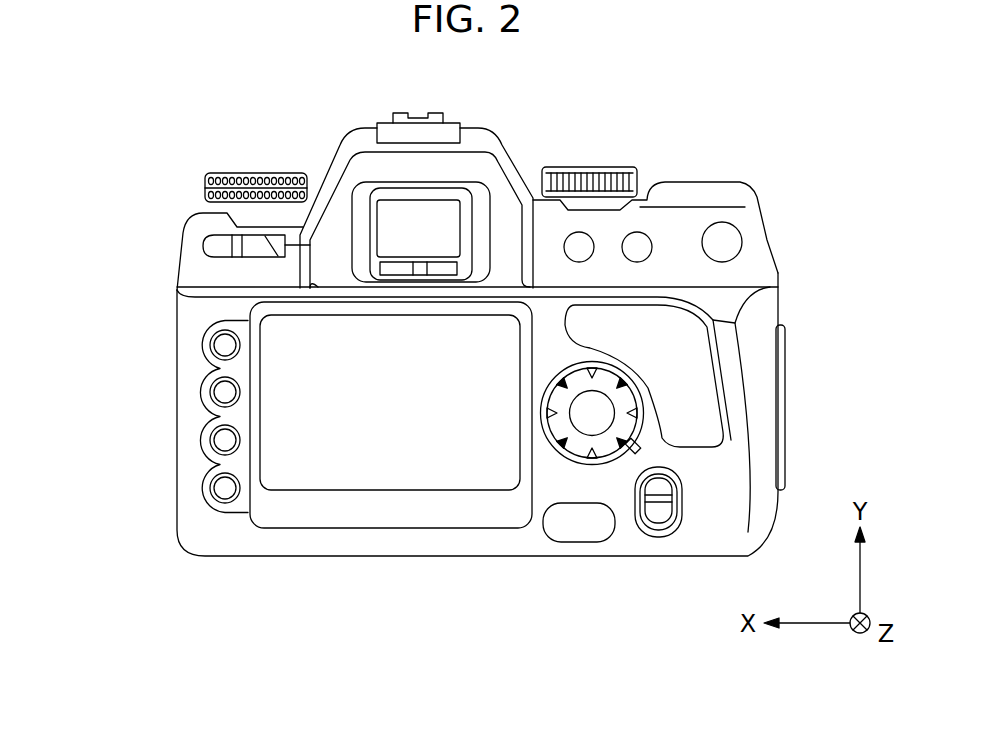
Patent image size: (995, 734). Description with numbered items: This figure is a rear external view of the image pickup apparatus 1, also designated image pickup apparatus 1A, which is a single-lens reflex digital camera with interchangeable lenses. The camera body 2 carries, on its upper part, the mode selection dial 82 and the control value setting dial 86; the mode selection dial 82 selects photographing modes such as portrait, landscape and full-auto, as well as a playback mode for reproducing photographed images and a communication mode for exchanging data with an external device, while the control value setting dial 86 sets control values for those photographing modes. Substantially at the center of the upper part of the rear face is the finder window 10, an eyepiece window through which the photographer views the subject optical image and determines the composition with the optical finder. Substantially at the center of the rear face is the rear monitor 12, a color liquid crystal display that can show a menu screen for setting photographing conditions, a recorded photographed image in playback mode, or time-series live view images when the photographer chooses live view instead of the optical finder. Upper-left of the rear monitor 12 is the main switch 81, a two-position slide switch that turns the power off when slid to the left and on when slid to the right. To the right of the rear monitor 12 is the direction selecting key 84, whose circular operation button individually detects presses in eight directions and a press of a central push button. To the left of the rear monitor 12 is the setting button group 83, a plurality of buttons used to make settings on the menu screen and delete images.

The image pickup apparatus 1 is at (750, 87).
The image pickup apparatus 1A is at (466, 334).
The camera body 2 is at (768, 302).
The finder window 10 is at (426, 218).
The rear monitor 12 is at (348, 460).
The main switch 81 is at (207, 252).
The mode selection dial 82 is at (588, 165).
The setting button group 83 is at (167, 323).
The direction selecting key 84 is at (575, 462).
The control value setting dial 86 is at (258, 173).